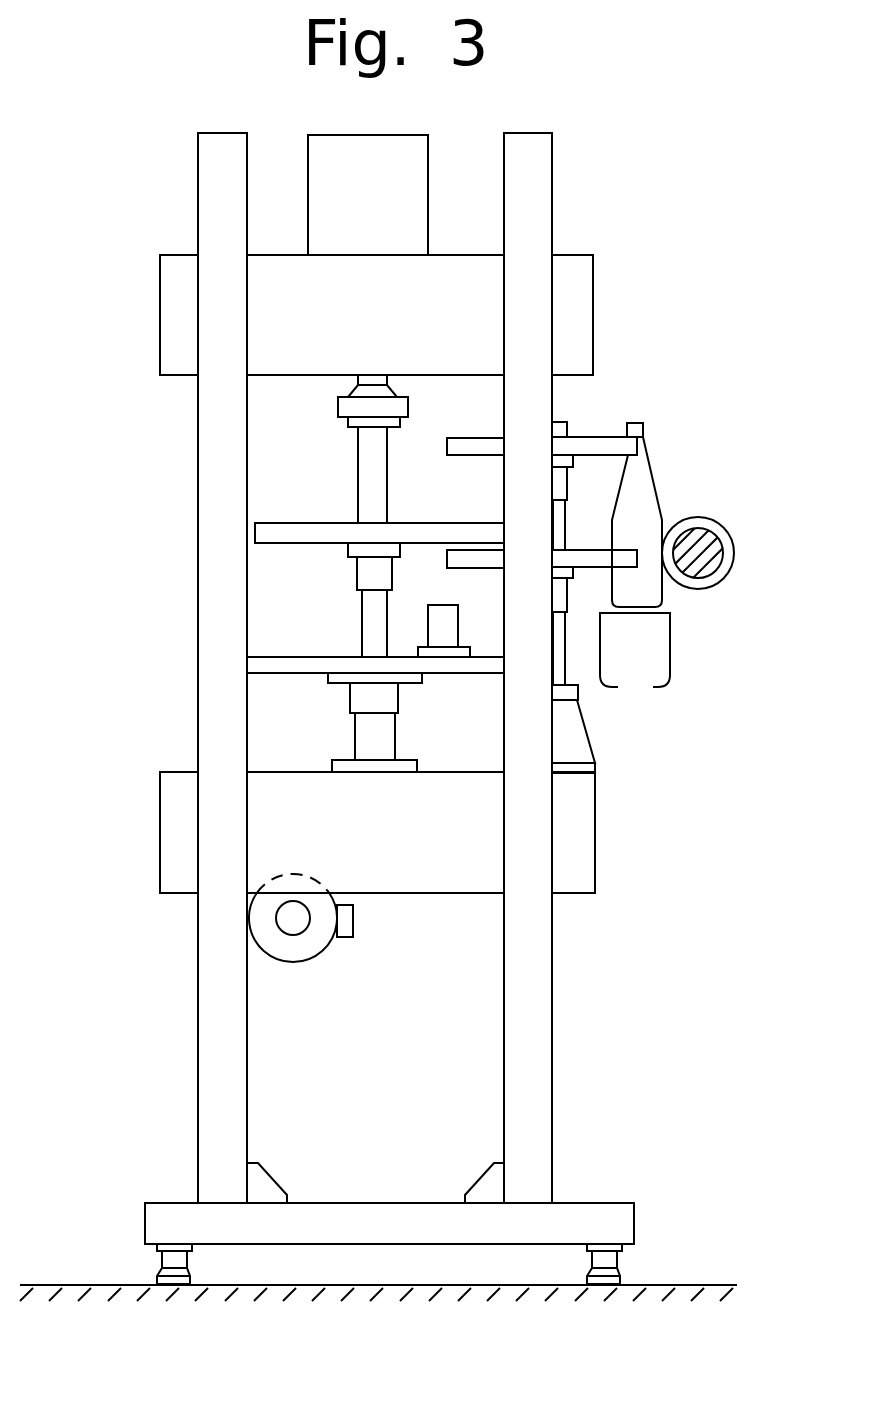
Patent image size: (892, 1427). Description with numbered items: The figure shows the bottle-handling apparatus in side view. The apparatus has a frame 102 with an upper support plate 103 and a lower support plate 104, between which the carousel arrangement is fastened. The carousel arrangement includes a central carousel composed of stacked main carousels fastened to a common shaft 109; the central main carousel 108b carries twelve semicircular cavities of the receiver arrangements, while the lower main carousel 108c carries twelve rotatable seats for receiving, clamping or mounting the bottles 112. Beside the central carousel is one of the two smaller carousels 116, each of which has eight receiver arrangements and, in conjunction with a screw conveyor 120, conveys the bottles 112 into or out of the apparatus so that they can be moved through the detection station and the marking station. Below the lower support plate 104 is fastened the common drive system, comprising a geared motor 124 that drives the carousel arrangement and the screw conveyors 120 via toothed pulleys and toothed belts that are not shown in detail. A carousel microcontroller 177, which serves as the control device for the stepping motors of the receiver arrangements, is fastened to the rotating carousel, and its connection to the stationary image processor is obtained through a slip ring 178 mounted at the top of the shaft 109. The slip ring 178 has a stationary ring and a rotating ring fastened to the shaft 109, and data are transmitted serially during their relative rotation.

The frame 102 is at (217, 487).
The upper support plate 103 is at (173, 333).
The lower support plate 104 is at (175, 815).
The central main carousel 108b is at (285, 533).
The lower main carousel 108c is at (297, 665).
The common shaft 109 is at (370, 747).
The bottle 112 is at (627, 498).
The smaller carousel 116 is at (593, 447).
The screw conveyor 120 is at (692, 555).
The geared motor 124 is at (298, 947).
The carousel microcontroller 177 is at (443, 627).
The slip ring 178 is at (338, 177).